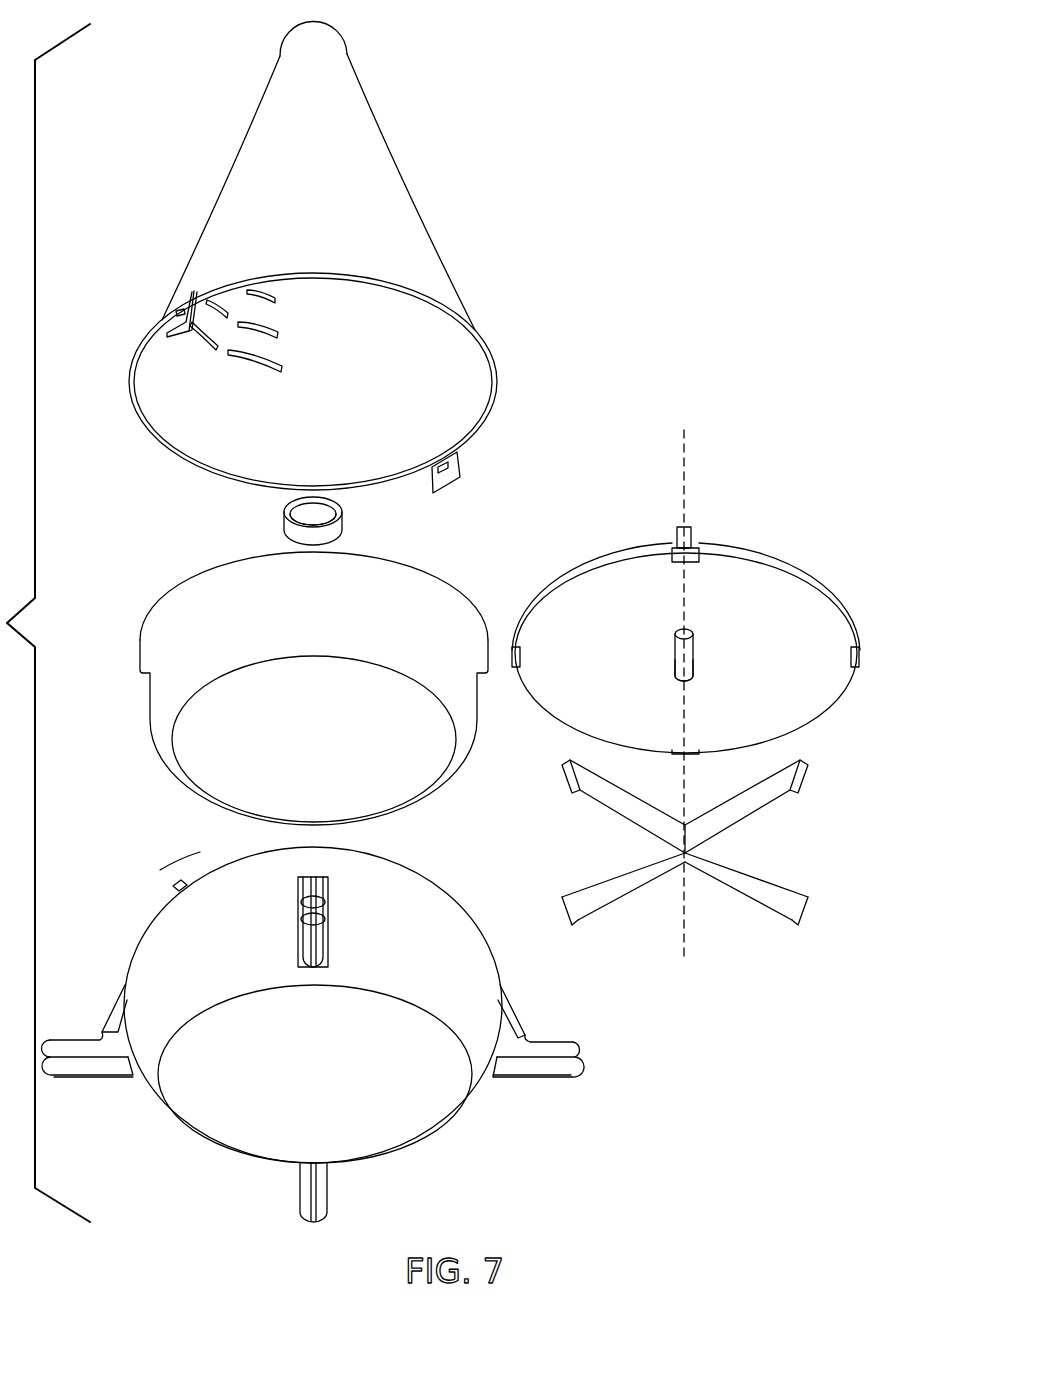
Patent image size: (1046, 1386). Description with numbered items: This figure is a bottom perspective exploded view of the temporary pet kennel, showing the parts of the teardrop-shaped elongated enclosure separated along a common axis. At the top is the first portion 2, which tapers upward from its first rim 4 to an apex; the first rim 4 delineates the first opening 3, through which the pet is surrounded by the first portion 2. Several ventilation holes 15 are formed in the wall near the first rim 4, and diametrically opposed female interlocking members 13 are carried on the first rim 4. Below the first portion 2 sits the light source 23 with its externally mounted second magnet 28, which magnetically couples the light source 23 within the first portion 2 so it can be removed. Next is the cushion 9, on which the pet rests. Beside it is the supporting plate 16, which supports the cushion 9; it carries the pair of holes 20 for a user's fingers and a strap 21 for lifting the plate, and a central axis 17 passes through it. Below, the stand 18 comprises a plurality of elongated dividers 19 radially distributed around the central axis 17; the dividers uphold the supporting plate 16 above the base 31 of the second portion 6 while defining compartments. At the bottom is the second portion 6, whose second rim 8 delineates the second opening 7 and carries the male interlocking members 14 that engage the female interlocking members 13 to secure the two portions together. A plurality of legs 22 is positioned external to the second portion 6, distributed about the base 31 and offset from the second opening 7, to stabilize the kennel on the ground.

The first portion 2 is at (367, 131).
The first opening 3 is at (197, 476).
The first rim 4 is at (173, 451).
The second portion 6 is at (428, 877).
The second opening 7 is at (180, 862).
The second rim 8 is at (175, 885).
The cushion 9 is at (165, 626).
The female interlocking member 13 is at (175, 303).
The male interlocking member 14 is at (187, 883).
The ventilation hole 15 is at (277, 297).
The supporting plate 16 is at (857, 620).
The central axis 17 is at (687, 447).
The stand 18 is at (717, 860).
The elongated divider 19 is at (563, 764).
The pair of holes 20 is at (694, 636).
The strap 21 is at (690, 663).
The leg 22 is at (323, 895).
The light source 23 is at (285, 515).
The second magnet 28 is at (328, 500).
The base 31 is at (315, 1074).